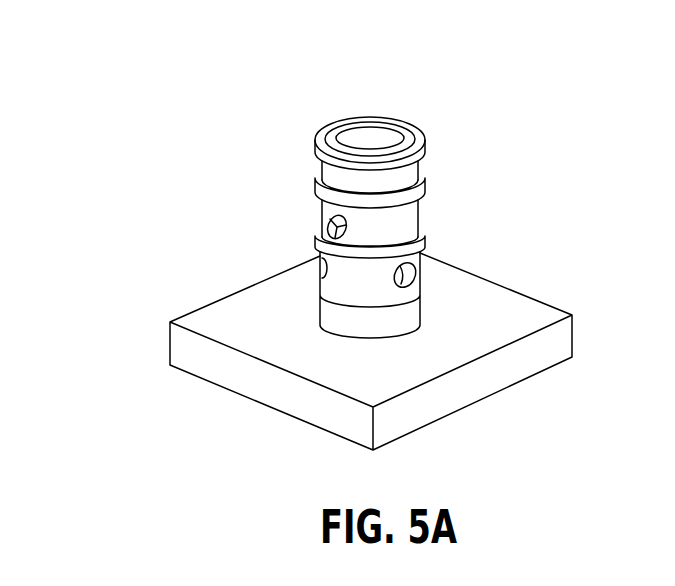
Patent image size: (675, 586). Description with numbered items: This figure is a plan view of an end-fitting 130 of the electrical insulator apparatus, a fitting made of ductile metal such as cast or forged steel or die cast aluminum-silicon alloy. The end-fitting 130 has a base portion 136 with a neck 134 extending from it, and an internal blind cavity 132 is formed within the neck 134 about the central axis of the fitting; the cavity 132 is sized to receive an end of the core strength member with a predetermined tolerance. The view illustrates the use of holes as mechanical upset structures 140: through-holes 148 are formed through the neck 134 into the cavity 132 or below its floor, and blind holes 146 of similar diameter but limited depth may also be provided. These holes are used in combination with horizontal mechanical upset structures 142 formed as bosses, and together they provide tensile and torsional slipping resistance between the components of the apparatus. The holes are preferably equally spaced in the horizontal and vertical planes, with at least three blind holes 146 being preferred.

The end-fitting 130 is at (510, 110).
The internal blind cavity 132 is at (378, 128).
The neck 134 is at (402, 180).
The base portion 136 is at (522, 365).
The mechanical upset structures 140 is at (119, 229).
The horizontal mechanical upset structures 142 is at (318, 188).
The blind hole 146 is at (322, 268).
The through-hole 148 is at (322, 233).